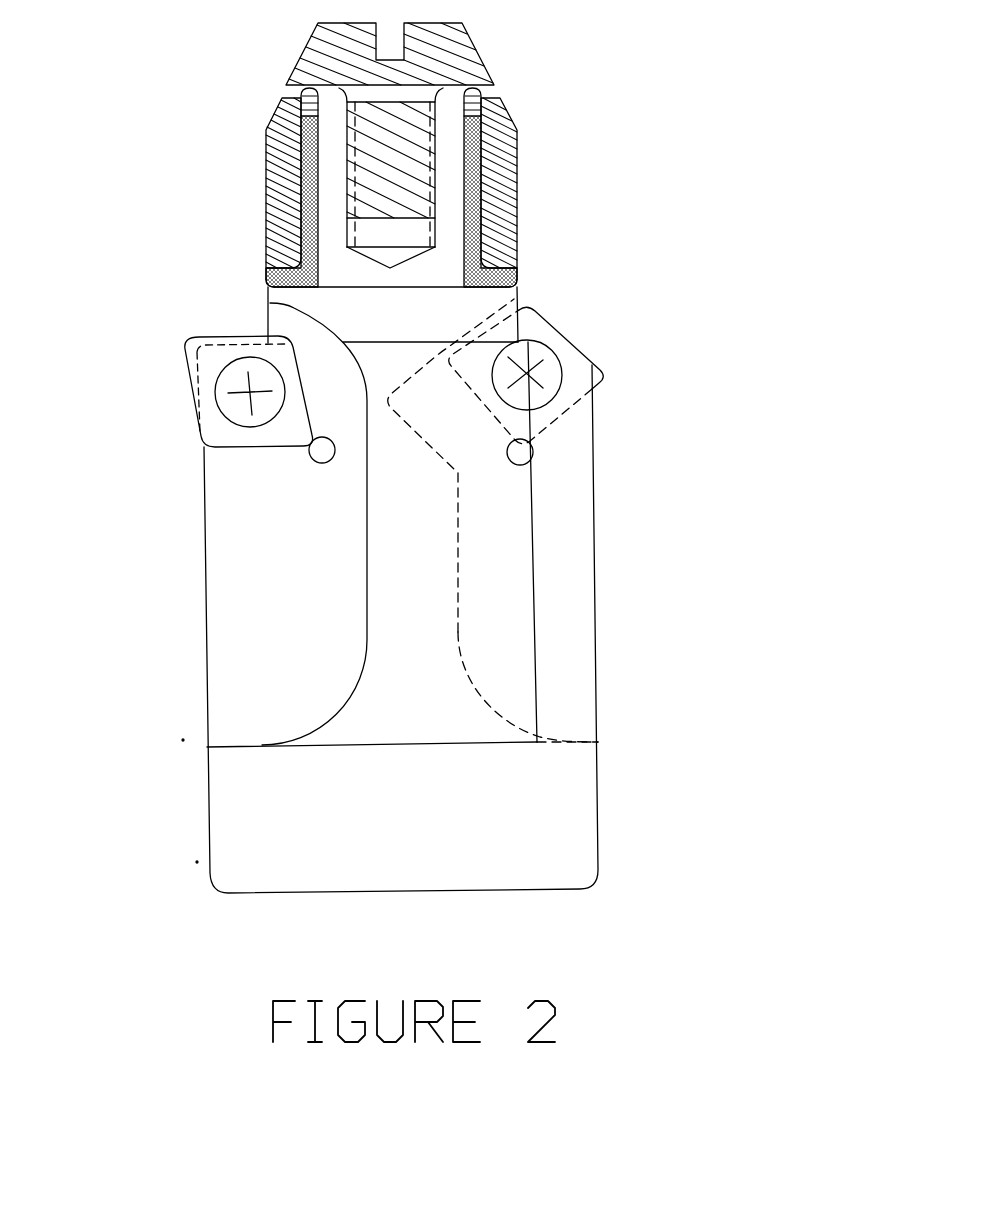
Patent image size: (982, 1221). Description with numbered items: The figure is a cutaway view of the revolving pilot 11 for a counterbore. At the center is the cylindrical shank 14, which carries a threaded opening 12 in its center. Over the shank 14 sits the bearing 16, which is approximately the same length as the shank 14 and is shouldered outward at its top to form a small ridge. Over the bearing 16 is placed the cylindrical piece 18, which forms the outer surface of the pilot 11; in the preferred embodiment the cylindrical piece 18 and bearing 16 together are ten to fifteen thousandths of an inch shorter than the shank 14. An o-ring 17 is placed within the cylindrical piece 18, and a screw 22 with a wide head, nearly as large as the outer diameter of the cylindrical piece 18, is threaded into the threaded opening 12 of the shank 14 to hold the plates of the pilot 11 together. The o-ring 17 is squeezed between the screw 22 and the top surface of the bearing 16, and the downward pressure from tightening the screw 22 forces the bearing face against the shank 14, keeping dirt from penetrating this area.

The revolving pilot 11 is at (337, 232).
The threaded opening 12 is at (390, 240).
The cylindrical shank 14 is at (450, 177).
The bearing 16 is at (517, 273).
The o-ring 17 is at (470, 97).
The cylindrical piece 18 is at (517, 150).
The screw 22 is at (478, 42).